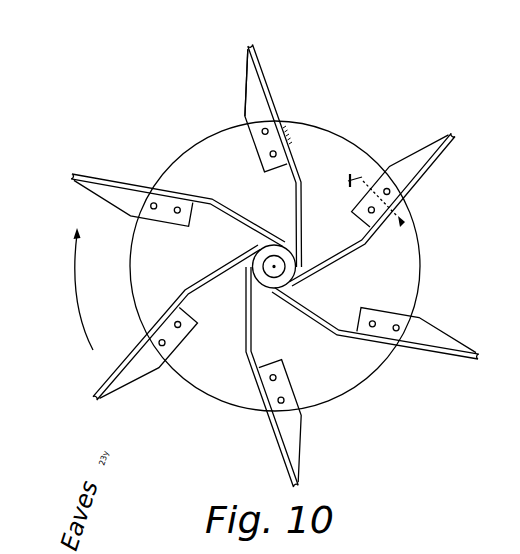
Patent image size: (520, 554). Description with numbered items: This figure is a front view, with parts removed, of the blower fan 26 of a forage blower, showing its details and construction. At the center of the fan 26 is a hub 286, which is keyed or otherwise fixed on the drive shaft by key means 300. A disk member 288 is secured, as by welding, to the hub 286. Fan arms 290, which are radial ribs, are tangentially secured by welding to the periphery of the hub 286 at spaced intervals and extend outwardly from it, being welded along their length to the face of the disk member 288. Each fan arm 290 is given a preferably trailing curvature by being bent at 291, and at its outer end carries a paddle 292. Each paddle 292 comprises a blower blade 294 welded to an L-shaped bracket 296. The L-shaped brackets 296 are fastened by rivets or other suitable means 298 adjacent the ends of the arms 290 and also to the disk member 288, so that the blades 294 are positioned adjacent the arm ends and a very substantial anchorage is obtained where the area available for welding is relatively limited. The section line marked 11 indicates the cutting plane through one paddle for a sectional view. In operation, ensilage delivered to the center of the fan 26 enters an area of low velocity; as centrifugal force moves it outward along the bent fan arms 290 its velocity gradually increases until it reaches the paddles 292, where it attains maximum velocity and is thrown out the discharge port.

The blower fan 26 is at (397, 147).
The disk member 288 is at (345, 142).
The key means 300 is at (254, 264).
The blower blades 294 is at (262, 68).
The paddles 292 is at (244, 98).
The L-shaped brackets 296 is at (246, 77).
The rivets 298 is at (287, 136).
The bend 291 is at (361, 245).
The fan arms 290 is at (350, 262).
The hub 286 is at (257, 282).
The section line 11- 11 is at (350, 181).